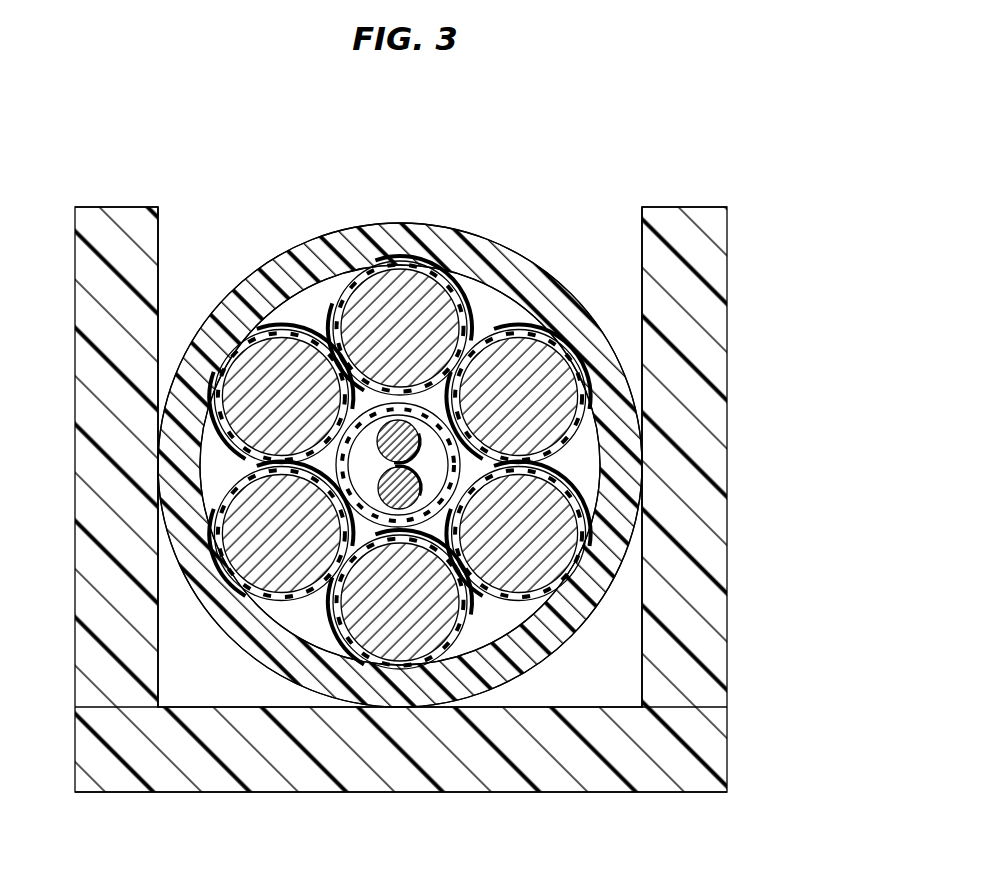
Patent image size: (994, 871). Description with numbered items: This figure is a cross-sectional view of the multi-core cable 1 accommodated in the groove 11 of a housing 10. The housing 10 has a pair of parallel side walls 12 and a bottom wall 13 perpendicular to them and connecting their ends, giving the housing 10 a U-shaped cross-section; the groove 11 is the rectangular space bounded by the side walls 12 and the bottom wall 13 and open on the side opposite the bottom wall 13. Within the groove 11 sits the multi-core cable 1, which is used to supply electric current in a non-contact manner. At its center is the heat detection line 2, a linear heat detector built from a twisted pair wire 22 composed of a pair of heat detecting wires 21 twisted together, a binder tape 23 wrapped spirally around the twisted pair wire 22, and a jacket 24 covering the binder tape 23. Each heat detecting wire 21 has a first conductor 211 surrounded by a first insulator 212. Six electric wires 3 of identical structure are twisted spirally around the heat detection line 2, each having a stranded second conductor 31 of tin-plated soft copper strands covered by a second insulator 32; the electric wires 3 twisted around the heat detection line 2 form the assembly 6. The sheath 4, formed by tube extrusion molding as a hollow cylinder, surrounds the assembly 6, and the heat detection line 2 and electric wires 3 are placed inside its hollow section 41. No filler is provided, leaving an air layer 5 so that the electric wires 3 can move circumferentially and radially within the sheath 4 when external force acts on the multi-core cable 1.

The multi-core cable 1 is at (437, 486).
The heat detection line 2 is at (588, 393).
The heat detecting wires 21 is at (609, 384).
The first conductor 211 is at (398, 443).
The first insulator 212 is at (400, 490).
The twisted pair wire 22 is at (344, 440).
The binder tape 23 is at (338, 455).
The jacket 24 is at (336, 468).
The electric wires 3 is at (427, 524).
The second conductor 31 is at (576, 500).
The second insulator 32 is at (556, 521).
The sheath 4 is at (588, 610).
The hollow section 41 is at (514, 614).
The air layer 5 is at (306, 605).
The assembly 6 is at (344, 292).
The housing 10 is at (409, 482).
The groove 11 is at (617, 226).
The side walls 12 is at (722, 237).
The bottom wall 13 is at (552, 781).